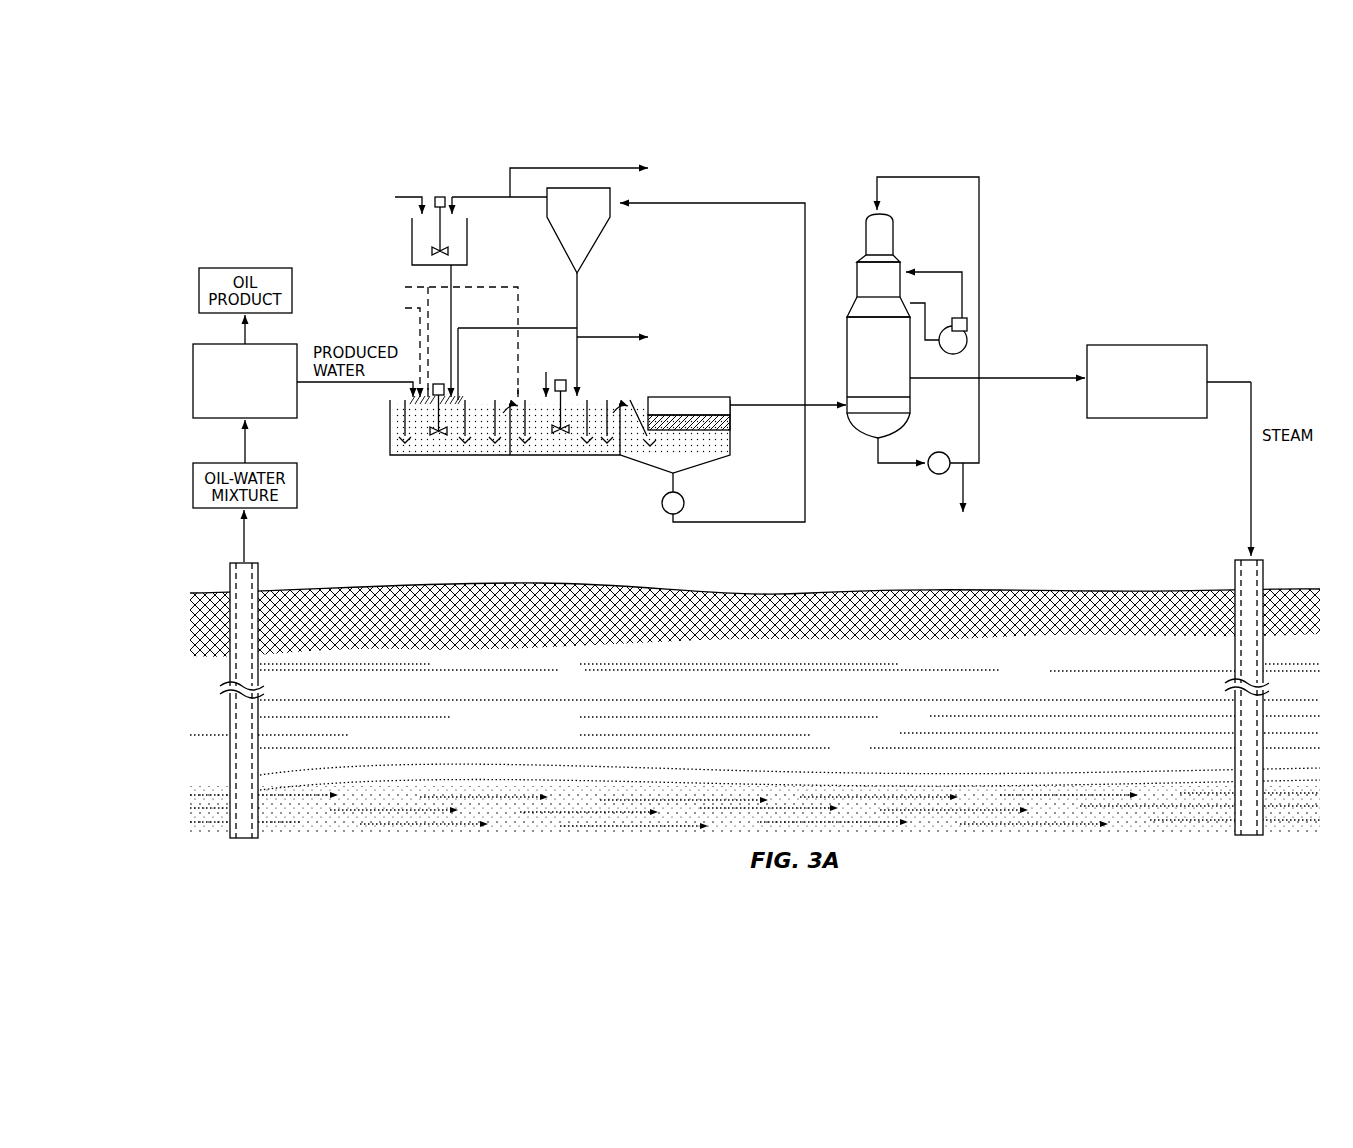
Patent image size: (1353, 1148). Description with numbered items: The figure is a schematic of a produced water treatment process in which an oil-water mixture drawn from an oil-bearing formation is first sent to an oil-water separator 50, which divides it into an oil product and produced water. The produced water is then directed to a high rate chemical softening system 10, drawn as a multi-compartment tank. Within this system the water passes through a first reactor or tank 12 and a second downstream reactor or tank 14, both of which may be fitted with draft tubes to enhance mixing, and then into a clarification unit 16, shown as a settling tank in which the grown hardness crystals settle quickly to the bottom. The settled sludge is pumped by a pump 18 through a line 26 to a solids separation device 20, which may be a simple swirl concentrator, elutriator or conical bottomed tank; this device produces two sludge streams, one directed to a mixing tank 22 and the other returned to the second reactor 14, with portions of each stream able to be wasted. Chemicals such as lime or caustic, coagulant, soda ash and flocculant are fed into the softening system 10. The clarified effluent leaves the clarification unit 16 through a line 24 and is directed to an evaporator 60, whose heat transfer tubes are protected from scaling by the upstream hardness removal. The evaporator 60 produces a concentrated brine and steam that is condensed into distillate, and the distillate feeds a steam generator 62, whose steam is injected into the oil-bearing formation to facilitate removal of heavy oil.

The high rate chemical softening system 10 is at (495, 152).
The first reactor or tank 12 is at (417, 450).
The second downstream reactor or tank 14 is at (541, 448).
The clarification unit 16 is at (652, 450).
The pump 18 is at (662, 508).
The solids separation device 20 is at (597, 240).
The mixing tank 22 is at (467, 240).
The line 24 is at (757, 405).
The line 26 is at (805, 248).
The oil-water separator 50 is at (245, 381).
The evaporator 60 is at (977, 349).
The steam generator 62 is at (1147, 381).